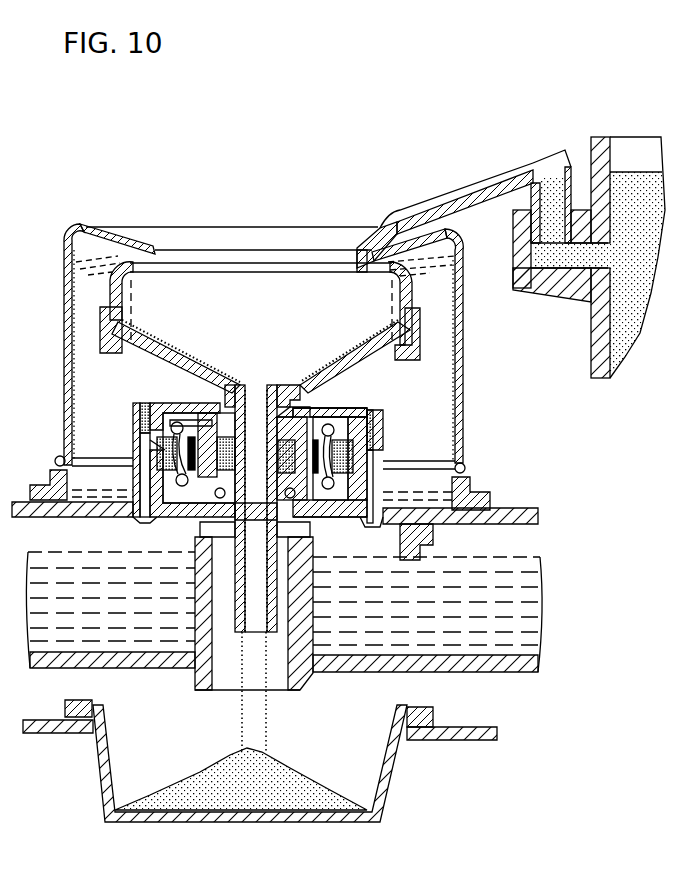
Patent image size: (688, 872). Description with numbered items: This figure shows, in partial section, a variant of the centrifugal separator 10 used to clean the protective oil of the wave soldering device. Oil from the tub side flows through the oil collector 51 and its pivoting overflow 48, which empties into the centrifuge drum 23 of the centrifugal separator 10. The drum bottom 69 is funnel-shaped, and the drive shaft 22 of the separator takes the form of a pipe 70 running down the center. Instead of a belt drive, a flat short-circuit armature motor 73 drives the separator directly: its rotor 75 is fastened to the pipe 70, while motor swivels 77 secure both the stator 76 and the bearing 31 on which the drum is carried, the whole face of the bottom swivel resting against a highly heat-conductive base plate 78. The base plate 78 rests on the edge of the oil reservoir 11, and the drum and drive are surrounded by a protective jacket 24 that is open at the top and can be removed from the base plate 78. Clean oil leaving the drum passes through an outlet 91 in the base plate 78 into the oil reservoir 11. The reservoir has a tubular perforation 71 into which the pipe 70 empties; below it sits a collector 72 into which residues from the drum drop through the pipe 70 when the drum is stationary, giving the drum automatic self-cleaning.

The centrifugal separator 10 is at (219, 200).
The oil reservoir 11 is at (520, 668).
The drive shaft 22 is at (283, 633).
The centrifuge drum 23 is at (415, 335).
The protective jacket 24 is at (67, 275).
The bearing 31 is at (303, 412).
The pivoting overflow 48 is at (473, 186).
The oil collector 51 is at (595, 355).
The bottom of the centrifuge drum 69 is at (322, 365).
The pipe 70 is at (266, 393).
The tubular perforation 71 is at (222, 690).
The collector 72 is at (388, 773).
The flat short-circuit armature motor 73 is at (392, 434).
The rotor 75 is at (196, 420).
The stator 76 is at (152, 445).
The motor swivels 77 is at (340, 408).
The base plate 78 is at (103, 517).
The outlet 91 is at (437, 538).